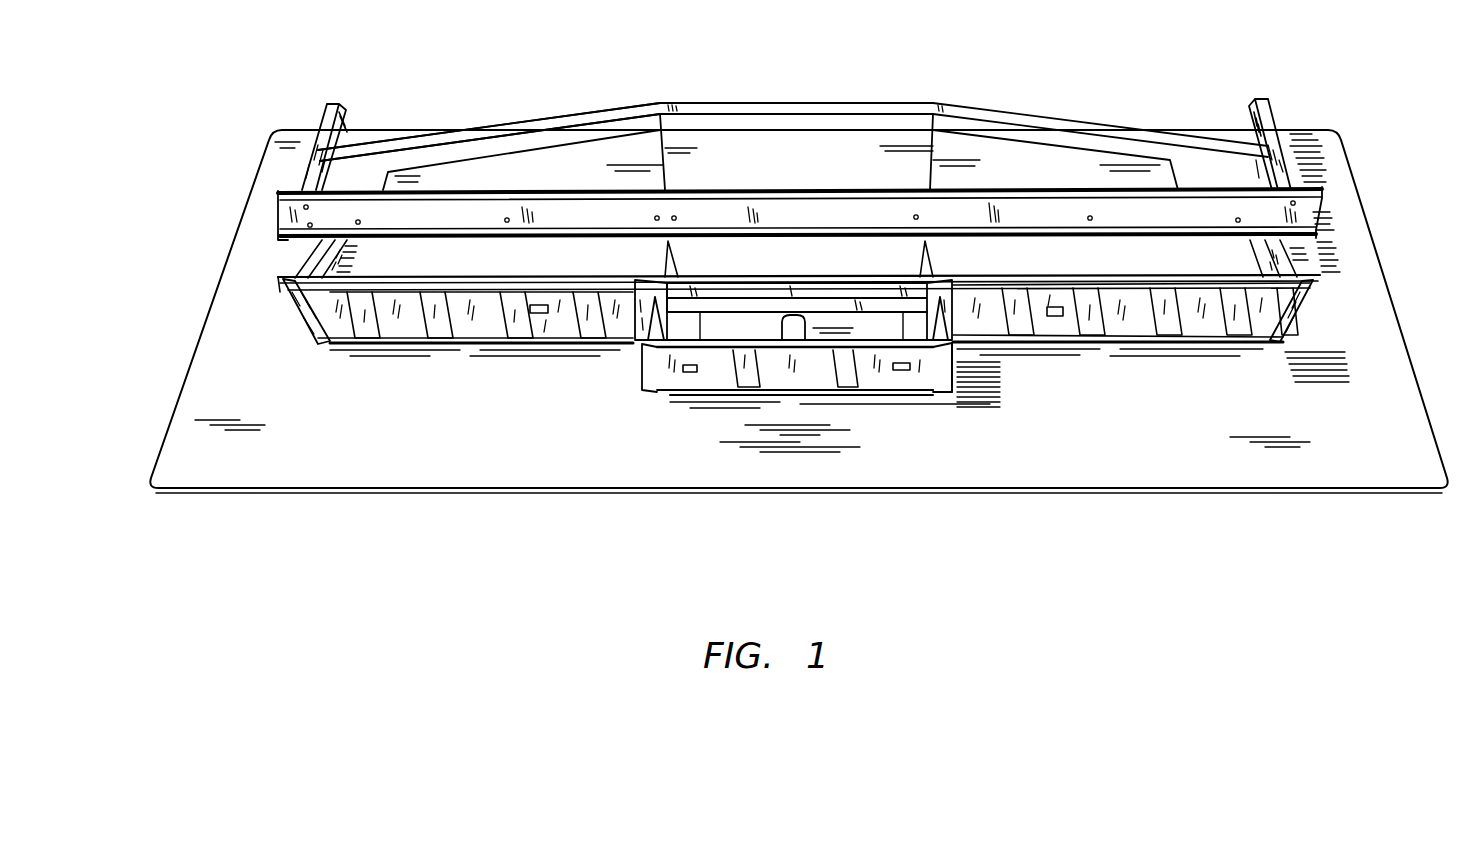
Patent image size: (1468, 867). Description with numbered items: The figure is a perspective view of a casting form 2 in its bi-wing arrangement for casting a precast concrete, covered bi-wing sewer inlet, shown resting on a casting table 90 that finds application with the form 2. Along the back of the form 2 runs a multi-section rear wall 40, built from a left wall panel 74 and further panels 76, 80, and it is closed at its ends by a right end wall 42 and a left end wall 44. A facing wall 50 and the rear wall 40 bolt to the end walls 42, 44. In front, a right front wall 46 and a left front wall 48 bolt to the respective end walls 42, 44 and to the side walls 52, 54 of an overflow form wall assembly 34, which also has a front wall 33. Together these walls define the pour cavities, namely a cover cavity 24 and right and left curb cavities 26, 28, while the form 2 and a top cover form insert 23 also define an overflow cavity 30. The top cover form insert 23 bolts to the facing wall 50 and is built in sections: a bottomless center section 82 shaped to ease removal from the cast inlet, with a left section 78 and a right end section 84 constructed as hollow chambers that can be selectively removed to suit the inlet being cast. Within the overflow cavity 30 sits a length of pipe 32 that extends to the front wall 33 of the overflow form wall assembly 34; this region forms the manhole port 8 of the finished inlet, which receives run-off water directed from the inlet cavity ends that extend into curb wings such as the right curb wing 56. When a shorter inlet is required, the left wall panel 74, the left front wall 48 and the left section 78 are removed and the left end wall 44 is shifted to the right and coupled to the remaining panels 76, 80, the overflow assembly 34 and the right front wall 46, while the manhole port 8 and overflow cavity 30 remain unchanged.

The casting form 2 is at (1088, 88).
The manhole port 8 is at (706, 263).
The top cover form insert 23 is at (806, 150).
The cover cavity 24 is at (520, 140).
The right curb cavity 26 is at (372, 262).
The left curb cavity 28 is at (1250, 262).
The overflow cavity 30 is at (668, 332).
The length of pipe 32 is at (800, 332).
The front wall 33 is at (920, 373).
The overflow form wall assembly 34 is at (678, 379).
The multi-section rear wall 40 is at (683, 100).
The right end wall 42 is at (1270, 100).
The left end wall 44 is at (327, 115).
The right front wall 46 is at (1118, 313).
The left front wall 48 is at (394, 323).
The facing wall 50 is at (280, 212).
The side wall 52 is at (640, 332).
The side wall 54 is at (948, 332).
The right curb wing 56 is at (605, 127).
The left wall panel 74 is at (432, 140).
The rear wall panel 76 is at (870, 105).
The left section 78 is at (477, 172).
The rear wall panel 80 is at (963, 105).
The bottomless center section 82 is at (752, 148).
The end section 84 is at (1014, 138).
The casting table 90 is at (188, 361).